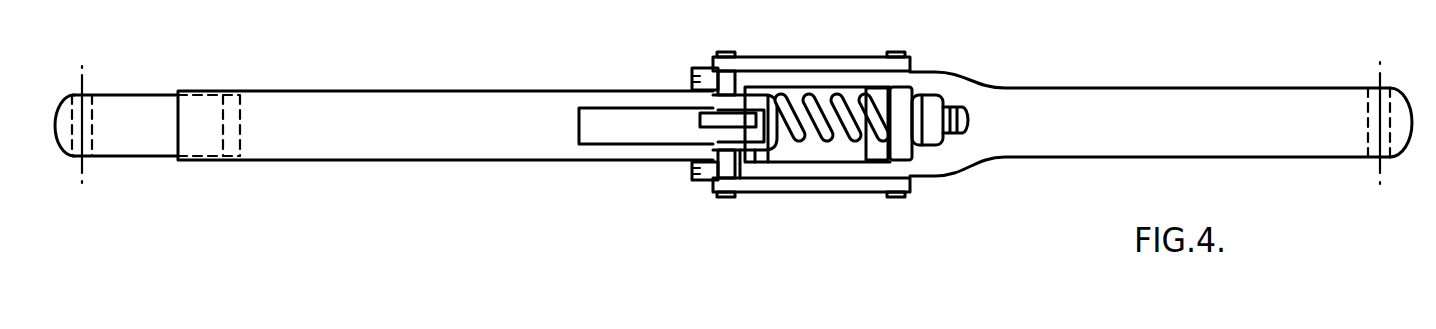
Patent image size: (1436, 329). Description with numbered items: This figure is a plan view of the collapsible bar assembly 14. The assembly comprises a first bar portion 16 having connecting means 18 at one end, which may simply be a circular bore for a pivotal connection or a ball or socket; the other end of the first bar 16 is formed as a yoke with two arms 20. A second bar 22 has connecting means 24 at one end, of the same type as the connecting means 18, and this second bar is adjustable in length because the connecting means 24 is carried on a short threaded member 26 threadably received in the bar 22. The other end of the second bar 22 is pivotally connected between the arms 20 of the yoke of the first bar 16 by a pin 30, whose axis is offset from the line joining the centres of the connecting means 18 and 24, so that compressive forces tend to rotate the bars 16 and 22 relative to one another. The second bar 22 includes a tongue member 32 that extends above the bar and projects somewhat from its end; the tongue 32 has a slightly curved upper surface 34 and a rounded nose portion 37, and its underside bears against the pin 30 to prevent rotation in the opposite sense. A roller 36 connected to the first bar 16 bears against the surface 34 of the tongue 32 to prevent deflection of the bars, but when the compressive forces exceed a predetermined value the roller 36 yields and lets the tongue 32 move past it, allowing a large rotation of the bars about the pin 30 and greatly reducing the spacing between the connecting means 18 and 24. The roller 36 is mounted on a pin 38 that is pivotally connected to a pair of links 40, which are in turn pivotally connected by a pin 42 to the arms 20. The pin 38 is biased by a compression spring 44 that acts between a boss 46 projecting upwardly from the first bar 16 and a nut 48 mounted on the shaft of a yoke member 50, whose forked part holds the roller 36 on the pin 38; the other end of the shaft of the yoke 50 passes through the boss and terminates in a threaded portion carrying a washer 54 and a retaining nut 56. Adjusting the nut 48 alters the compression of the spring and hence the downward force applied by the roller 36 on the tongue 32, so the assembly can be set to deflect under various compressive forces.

The bar assembly 14 is at (519, 66).
The first bar portion 16 is at (1177, 95).
The connecting means 18 is at (1373, 110).
The arms 20 is at (697, 80).
The second bar 22 is at (343, 102).
The connecting means 24 is at (85, 122).
The threaded member 26 is at (132, 150).
The pin 30 is at (708, 64).
The tongue member 32 is at (600, 120).
The curved upper surface 34 is at (700, 120).
The roller 36 is at (745, 146).
The rounded nose portion 37 is at (772, 142).
The pin 38 is at (716, 188).
The links 40 is at (785, 62).
The pin 42 is at (896, 198).
The compression spring 44 is at (910, 88).
The boss 46 is at (832, 130).
The nut 48 is at (800, 128).
The yoke member 50 is at (757, 150).
The washer 54 is at (918, 90).
The retaining nut 56 is at (938, 88).